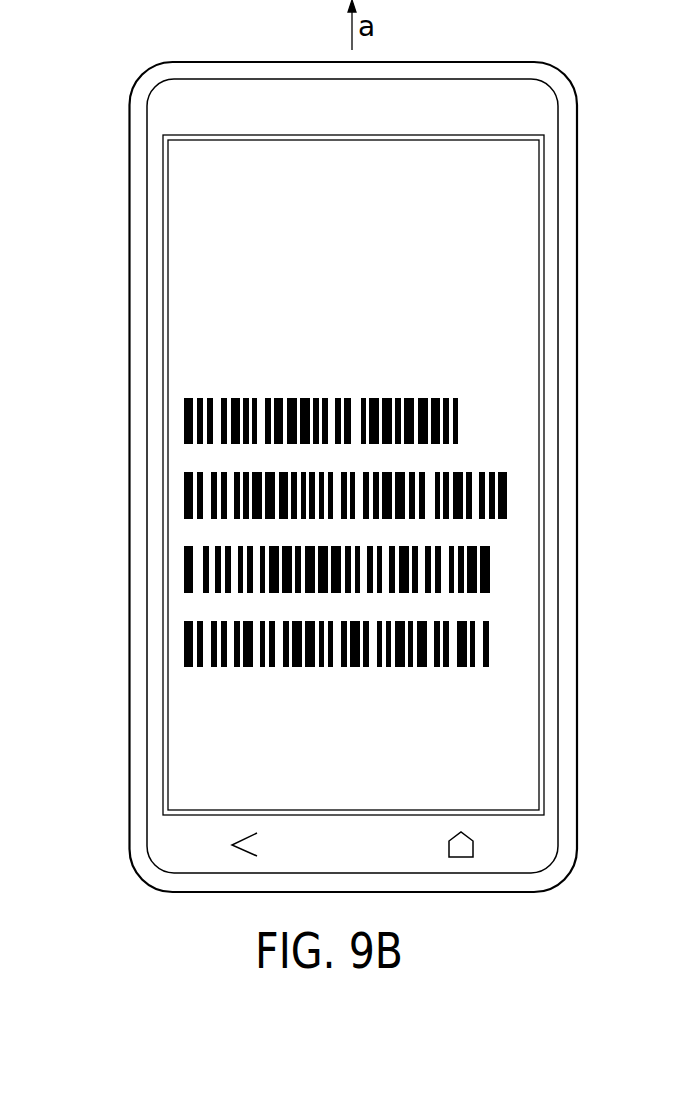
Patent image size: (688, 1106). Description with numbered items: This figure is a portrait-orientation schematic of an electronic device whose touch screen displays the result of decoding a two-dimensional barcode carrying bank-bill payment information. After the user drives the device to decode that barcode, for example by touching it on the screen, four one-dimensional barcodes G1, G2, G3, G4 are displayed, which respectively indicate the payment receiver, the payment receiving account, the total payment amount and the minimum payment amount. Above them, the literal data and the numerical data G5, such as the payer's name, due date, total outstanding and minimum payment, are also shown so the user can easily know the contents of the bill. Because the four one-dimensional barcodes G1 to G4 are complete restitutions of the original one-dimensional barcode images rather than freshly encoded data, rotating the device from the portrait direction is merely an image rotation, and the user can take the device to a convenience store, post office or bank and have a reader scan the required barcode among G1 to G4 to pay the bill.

The 1D barcode G1 is at (162, 422).
The 1D barcode G2 is at (162, 496).
The 1D barcode G3 is at (162, 571).
The 1D barcode G4 is at (162, 645).
The literal data and numerical data G5 is at (162, 275).